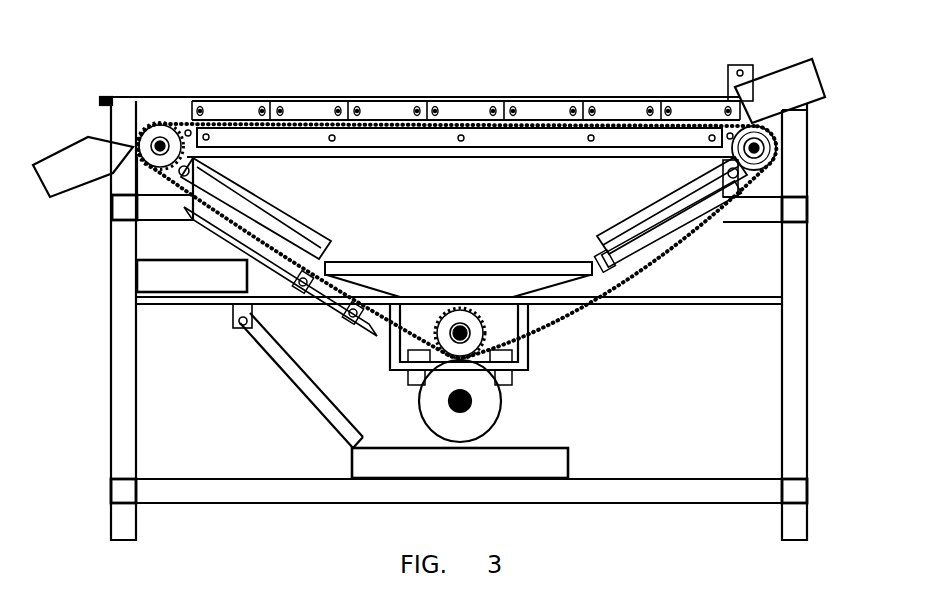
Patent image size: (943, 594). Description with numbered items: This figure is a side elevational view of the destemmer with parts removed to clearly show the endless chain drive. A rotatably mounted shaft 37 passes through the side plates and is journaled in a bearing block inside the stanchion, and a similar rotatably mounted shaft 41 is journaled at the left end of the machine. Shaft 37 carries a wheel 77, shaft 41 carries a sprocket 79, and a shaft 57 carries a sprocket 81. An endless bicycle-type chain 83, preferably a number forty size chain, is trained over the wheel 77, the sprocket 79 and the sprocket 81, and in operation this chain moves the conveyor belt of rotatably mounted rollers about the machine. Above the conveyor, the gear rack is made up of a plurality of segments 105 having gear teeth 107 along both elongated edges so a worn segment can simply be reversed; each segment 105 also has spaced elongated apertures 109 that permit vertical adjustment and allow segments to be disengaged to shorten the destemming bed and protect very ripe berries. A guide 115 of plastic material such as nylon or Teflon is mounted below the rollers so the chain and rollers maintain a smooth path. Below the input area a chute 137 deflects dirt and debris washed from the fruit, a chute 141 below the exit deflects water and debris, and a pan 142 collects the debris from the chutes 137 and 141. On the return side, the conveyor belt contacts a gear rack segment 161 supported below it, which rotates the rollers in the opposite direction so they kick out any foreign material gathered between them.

The rotatably mounted shaft 37 is at (763, 143).
The rotatably mounted shaft 41 is at (157, 140).
The shaft 57 is at (450, 313).
The wheel 77 is at (772, 160).
The sprocket 79 is at (170, 130).
The sprocket 81 is at (470, 313).
The endless bicycle-type chain 83 is at (560, 320).
The gear rack segment 105 is at (480, 110).
The gear teeth 107 is at (548, 100).
The elongated apertures 109 is at (338, 108).
The guide 115 is at (387, 138).
The chute 137 is at (607, 233).
The chute 141 is at (277, 212).
The pan 142 is at (413, 268).
The gear rack segment 161 is at (327, 297).